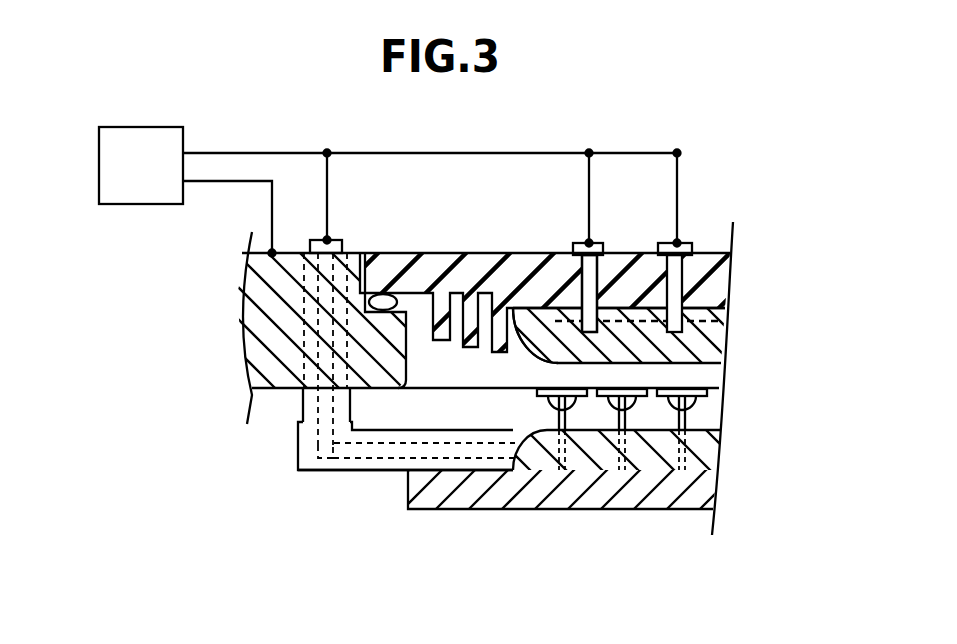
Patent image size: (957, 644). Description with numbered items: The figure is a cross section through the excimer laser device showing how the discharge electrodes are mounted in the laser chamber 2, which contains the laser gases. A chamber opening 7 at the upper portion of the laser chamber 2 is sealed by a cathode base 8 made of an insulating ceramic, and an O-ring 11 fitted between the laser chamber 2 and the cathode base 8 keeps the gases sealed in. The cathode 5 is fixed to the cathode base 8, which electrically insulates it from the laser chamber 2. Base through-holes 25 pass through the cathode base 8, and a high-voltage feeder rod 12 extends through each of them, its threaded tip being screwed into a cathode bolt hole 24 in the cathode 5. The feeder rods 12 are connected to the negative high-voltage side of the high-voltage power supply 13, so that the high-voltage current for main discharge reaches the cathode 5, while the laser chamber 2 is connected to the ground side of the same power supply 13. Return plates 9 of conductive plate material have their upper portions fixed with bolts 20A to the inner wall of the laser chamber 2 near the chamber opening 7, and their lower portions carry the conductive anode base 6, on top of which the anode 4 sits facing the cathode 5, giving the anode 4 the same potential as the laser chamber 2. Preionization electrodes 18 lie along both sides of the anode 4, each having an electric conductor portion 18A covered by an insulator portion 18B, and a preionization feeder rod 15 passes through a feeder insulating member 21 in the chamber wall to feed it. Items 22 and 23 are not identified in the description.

The laser chamber 2 is at (278, 375).
The anode 4 is at (705, 428).
The cathode 5 is at (700, 368).
The anode base 6 is at (563, 510).
The chamber opening 7 is at (364, 262).
The cathode base 8 is at (441, 270).
The return plates 9 is at (677, 417).
The O-ring 11 is at (392, 313).
The high-voltage feeder rod 12 is at (590, 240).
The high-voltage power supply 13 is at (128, 204).
The preionization feeder rod 15 is at (338, 240).
The preionization electrode 18 is at (458, 571).
The electric conductor portion 18A is at (431, 472).
The insulator portion 18B is at (364, 472).
The bolts 20A is at (537, 395).
The feeder insulating member 21 is at (352, 422).
The embedded electrode 22 is at (720, 321).
The insulating layer 23 is at (720, 310).
The cathode bolt hole 24 is at (566, 325).
The base through-holes 25 is at (579, 262).